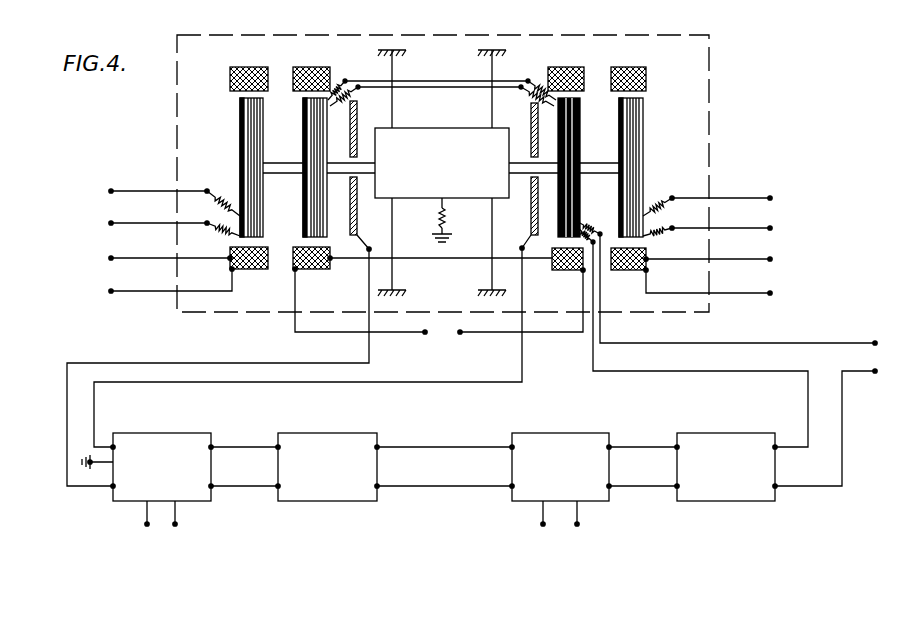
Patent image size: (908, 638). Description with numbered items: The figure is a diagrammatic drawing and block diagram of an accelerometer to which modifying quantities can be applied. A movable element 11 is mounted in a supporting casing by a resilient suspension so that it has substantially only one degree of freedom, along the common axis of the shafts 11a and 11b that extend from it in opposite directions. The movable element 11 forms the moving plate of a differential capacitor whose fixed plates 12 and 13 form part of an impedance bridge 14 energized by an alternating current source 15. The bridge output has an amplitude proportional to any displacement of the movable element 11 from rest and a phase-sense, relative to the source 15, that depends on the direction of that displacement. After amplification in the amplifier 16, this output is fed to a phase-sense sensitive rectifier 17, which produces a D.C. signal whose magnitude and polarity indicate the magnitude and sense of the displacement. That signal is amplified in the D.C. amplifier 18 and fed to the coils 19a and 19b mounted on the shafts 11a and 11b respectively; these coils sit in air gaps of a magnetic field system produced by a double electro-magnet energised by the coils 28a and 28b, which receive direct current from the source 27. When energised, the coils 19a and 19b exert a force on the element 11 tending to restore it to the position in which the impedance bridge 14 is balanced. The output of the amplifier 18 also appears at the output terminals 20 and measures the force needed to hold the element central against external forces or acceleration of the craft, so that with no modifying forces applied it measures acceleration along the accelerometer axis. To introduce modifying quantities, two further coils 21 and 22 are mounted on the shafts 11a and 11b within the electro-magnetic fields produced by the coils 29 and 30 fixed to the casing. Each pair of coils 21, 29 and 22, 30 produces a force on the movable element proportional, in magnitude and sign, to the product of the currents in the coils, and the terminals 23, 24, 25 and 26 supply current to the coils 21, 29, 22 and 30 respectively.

The movable element 11 is at (430, 130).
The shaft 11a is at (292, 174).
The shaft 11b is at (593, 168).
The fixed plate 12 is at (357, 128).
The fixed plate 13 is at (531, 108).
The impedance bridge 14 is at (180, 467).
The alternating current source 15 is at (362, 519).
The amplifier 16 is at (394, 467).
The phase-sense sensitive rectifier 17 is at (593, 467).
The D.C. amplifier 18 is at (726, 467).
The coil 19a is at (303, 108).
The coil 19b is at (579, 137).
The output terminals 20 is at (826, 419).
The coil 21 is at (240, 118).
The coil 22 is at (643, 135).
The terminals 23 is at (174, 212).
The terminals 24 is at (170, 274).
The terminals 25 is at (707, 216).
The terminals 26 is at (709, 276).
The source 27 is at (442, 334).
The coil 28a is at (317, 270).
The coil 28b is at (573, 271).
The coil 29 is at (255, 270).
The coil 30 is at (634, 271).